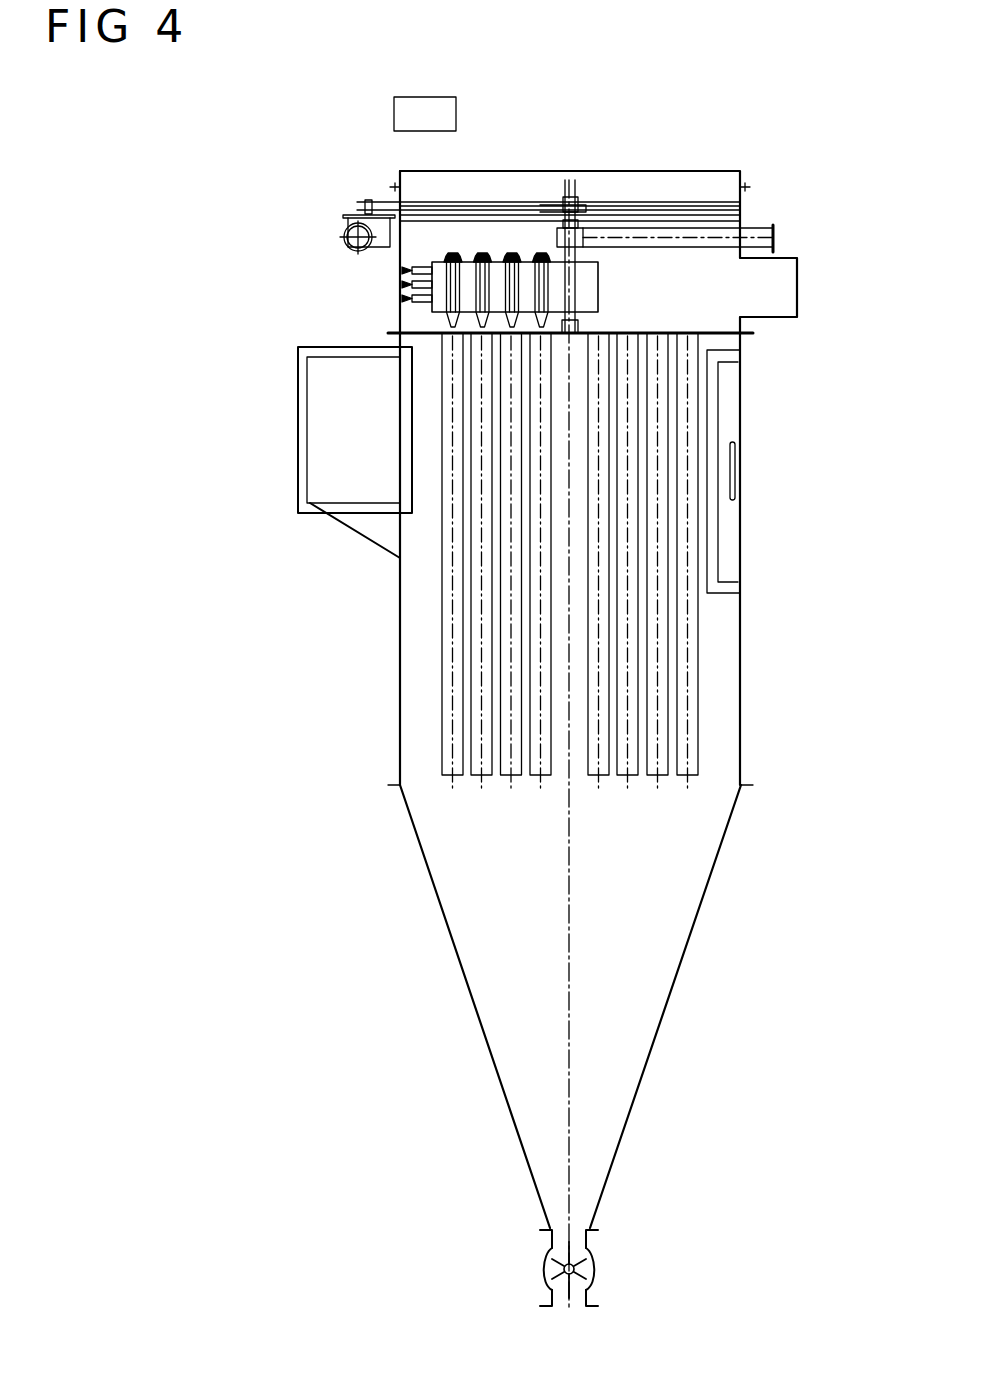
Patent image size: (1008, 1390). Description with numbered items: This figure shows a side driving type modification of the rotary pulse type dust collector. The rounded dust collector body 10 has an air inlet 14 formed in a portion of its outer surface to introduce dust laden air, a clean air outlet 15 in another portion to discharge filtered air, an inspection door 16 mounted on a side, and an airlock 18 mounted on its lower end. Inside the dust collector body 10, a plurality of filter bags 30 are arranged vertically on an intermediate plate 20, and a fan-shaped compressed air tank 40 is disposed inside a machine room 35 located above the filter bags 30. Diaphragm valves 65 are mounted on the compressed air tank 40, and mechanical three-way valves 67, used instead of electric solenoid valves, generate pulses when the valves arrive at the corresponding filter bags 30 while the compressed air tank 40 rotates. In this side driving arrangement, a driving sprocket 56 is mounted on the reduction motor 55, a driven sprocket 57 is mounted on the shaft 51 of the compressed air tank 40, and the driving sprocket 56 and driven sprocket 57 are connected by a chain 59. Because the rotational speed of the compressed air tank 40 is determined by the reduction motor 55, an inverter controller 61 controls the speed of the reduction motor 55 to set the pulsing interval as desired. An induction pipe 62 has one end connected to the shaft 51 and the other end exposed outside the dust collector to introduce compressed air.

The dust collector body 10 is at (741, 733).
The air inlet 14 is at (317, 437).
The clean air outlet 15 is at (786, 272).
The inspection door 16 is at (730, 568).
The airlock 18 is at (545, 1268).
The intermediate plate 20 is at (753, 333).
The filter bags 30 is at (690, 648).
The machine room 35 is at (730, 328).
The compressed air tank 40 is at (594, 302).
The shaft 51 is at (578, 266).
The reduction motor 55 is at (344, 235).
The driving sprocket 56 is at (365, 203).
The driven sprocket 57 is at (579, 199).
The chain 59 is at (424, 203).
The inverter controller 61 is at (410, 113).
The induction pipe 62 is at (762, 233).
The diaphragm valves 65 is at (489, 253).
The mechanical 3-way valves 67 is at (412, 286).